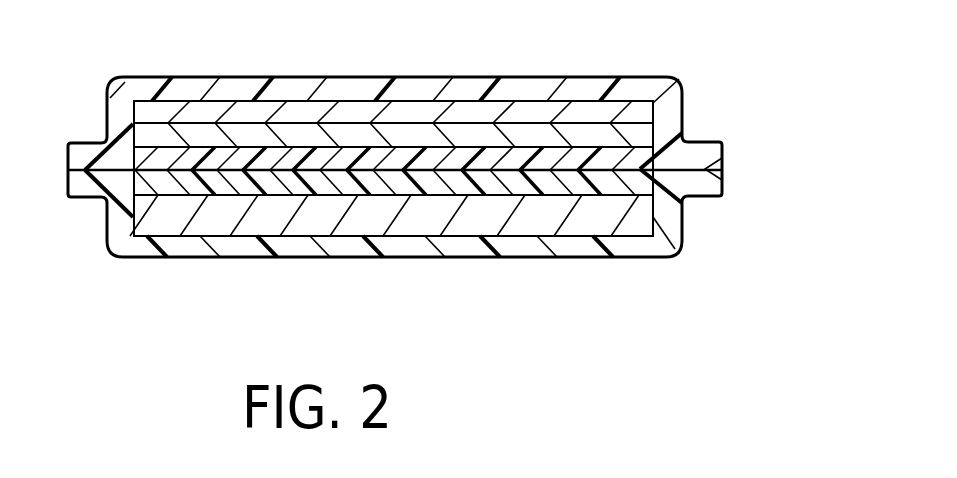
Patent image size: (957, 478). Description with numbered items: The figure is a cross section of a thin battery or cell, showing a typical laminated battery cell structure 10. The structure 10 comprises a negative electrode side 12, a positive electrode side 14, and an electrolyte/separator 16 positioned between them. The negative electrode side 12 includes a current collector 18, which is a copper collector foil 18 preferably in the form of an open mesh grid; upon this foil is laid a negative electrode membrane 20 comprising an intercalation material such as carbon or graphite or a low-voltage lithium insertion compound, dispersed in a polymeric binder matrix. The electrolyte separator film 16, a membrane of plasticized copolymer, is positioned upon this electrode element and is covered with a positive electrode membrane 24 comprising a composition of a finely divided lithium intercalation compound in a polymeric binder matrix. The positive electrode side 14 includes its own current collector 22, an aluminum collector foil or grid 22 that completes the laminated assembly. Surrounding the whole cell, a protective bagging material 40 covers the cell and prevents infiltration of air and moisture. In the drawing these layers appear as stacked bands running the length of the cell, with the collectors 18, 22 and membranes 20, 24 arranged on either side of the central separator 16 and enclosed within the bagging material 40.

The laminated battery cell structure 10 is at (720, 69).
The negative electrode side 12 is at (258, 100).
The positive electrode side 14 is at (405, 237).
The electrolyte/separator 16 is at (640, 155).
The current collector 18 is at (433, 110).
The negative electrode membrane 20 is at (145, 137).
The current collector 22 is at (145, 227).
The positive electrode membrane 24 is at (637, 185).
The protective bagging material 40 is at (587, 252).